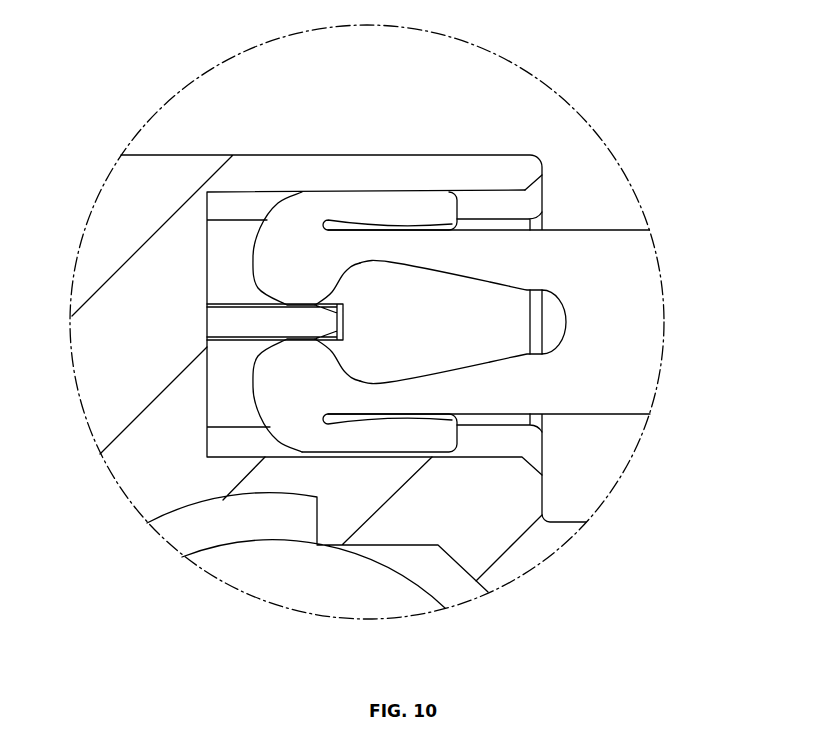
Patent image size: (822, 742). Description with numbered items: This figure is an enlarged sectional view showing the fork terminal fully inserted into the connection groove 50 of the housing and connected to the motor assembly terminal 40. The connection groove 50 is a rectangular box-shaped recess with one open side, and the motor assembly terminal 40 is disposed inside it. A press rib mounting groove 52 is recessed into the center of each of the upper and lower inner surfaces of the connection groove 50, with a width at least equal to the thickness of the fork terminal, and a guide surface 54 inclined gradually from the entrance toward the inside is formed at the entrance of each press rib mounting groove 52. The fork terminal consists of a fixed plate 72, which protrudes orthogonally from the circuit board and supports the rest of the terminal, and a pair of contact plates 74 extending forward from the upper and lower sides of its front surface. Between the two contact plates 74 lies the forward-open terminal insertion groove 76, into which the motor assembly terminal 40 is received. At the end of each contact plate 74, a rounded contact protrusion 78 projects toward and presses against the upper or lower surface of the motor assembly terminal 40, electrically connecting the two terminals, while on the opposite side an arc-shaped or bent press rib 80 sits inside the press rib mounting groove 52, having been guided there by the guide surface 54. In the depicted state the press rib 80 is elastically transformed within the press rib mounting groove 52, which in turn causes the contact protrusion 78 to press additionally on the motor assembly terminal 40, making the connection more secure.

The motor assembly terminal 40 is at (223, 325).
The connection groove 50 is at (248, 220).
The press rib mounting groove 52 is at (477, 190).
The guide surface 54 is at (542, 177).
The fixed plate 72 is at (627, 322).
The contact plate 74 is at (422, 253).
The terminal insertion groove 76 is at (490, 282).
The contact protrusion 78 is at (293, 283).
The press rib 80 is at (395, 205).